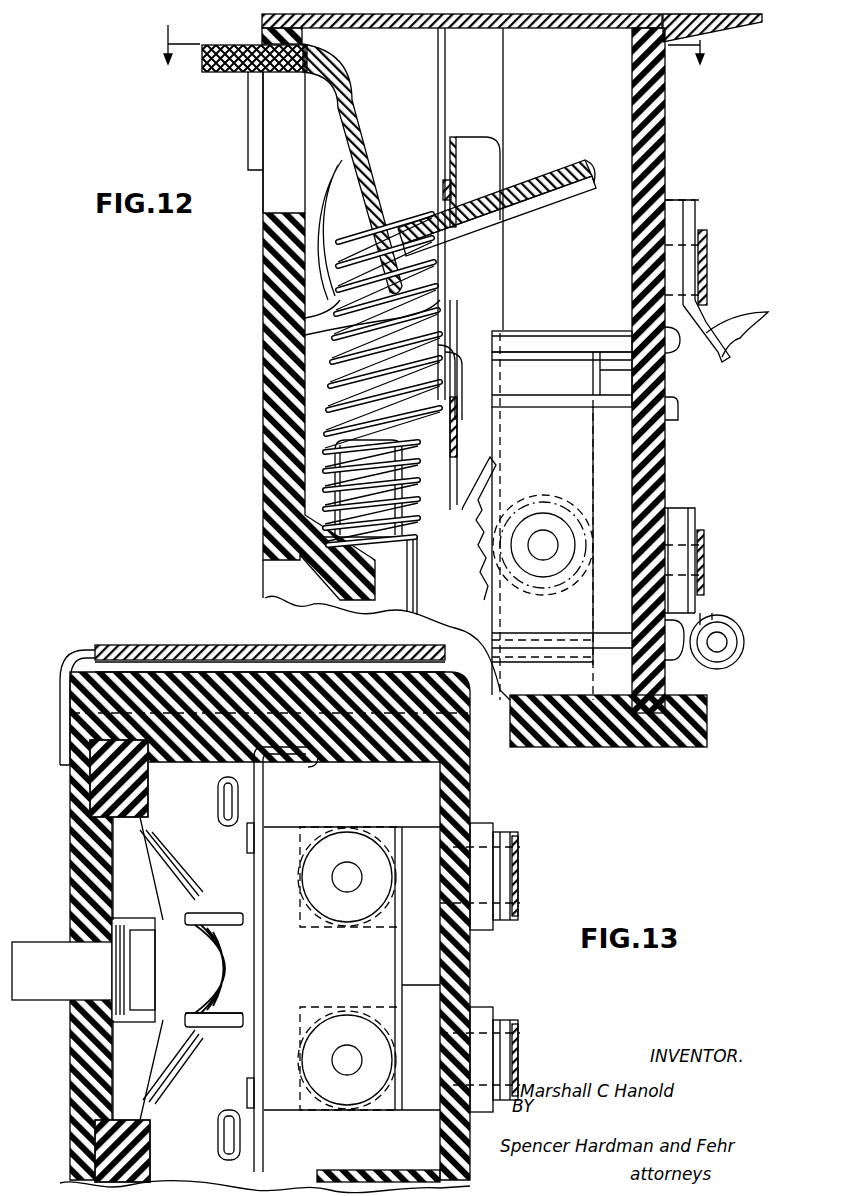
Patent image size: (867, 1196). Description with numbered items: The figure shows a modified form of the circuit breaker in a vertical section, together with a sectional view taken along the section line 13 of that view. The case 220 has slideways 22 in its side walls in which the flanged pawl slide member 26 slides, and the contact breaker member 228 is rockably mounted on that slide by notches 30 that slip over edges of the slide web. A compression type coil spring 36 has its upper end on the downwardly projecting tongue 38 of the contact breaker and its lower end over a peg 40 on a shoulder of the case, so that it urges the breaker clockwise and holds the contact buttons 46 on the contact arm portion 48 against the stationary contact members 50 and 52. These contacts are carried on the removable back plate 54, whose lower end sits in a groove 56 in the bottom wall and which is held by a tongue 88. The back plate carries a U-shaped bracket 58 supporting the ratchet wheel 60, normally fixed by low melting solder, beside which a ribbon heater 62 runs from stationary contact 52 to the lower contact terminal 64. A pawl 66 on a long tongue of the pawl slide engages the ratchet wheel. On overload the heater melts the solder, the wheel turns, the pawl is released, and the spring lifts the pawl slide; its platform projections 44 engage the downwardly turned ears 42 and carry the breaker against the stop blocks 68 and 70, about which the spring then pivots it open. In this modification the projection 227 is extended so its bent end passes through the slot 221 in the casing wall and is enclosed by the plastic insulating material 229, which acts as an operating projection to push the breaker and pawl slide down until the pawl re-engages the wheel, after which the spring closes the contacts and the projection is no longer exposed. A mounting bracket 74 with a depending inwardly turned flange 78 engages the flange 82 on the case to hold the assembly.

In FIG. 12, the section line 13— 13 is at (440, 35).
In FIG. 12, the mounting bracket 74 is at (430, 29).
In FIG. 13, the mounting bracket 74 is at (216, 650).
In FIG. 12, the tongue 88 is at (672, 22).
In FIG. 12, the plastic electrical insulating material 229 is at (215, 74).
In FIG. 13, the plastic electrical insulating material 229 is at (32, 942).
In FIG. 12, the projection 227 is at (352, 142).
In FIG. 13, the projection 227 is at (152, 905).
In FIG. 12, the stop block 68 is at (310, 138).
In FIG. 13, the stop block 68 is at (95, 781).
In FIG. 12, the slot 221 is at (270, 192).
In FIG. 12, the case 220 is at (268, 430).
In FIG. 13, the case 220 is at (72, 870).
In FIG. 12, the peg 40 is at (342, 490).
In FIG. 12, the compression type coil spring 36 is at (332, 352).
In FIG. 13, the compression type coil spring 36 is at (216, 925).
In FIG. 12, the downwardly projecting tongue 38 is at (350, 288).
In FIG. 13, the downwardly projecting tongue 38 is at (243, 1020).
In FIG. 12, the downwardly turned ears 42 is at (305, 315).
In FIG. 13, the downwardly turned ears 42 is at (236, 806).
In FIG. 12, the slideways 22 is at (500, 82).
In FIG. 13, the slideways 22 is at (315, 762).
In FIG. 12, the contact breaker member 228 is at (572, 258).
In FIG. 13, the contact breaker member 228 is at (254, 878).
In FIG. 12, the platform projections 44 is at (446, 378).
In FIG. 12, the flanged pawl slide member 26 is at (490, 152).
In FIG. 13, the flanged pawl slide member 26 is at (282, 756).
In FIG. 12, the contact arm portion 48 is at (575, 168).
In FIG. 13, the contact arm portion 48 is at (392, 955).
In FIG. 12, the contact buttons 46 is at (548, 203).
In FIG. 13, the contact buttons 46 is at (385, 835).
In FIG. 12, the stationary contact member 50 is at (585, 320).
In FIG. 13, the stationary contact member 50 is at (420, 827).
In FIG. 12, the ribbon heater 62 is at (497, 390).
In FIG. 12, the U-shaped bracket 58 is at (658, 385).
In FIG. 12, the ratchet wheel 60 is at (572, 498).
In FIG. 12, the pawl 66 is at (478, 495).
In FIG. 12, the removable back plate 54 is at (668, 470).
In FIG. 13, the removable back plate 54 is at (474, 802).
In FIG. 12, the lower contact terminal 64 is at (720, 632).
In FIG. 12, the groove 56 is at (672, 697).
In FIG. 13, the depending inwardly turned flange 78 is at (66, 652).
In FIG. 13, the flange 82 is at (310, 672).
In FIG. 13, the stop block 70 is at (98, 1140).
In FIG. 13, the notches 30 is at (247, 836).
In FIG. 13, the stationary contact member 52 is at (425, 1100).